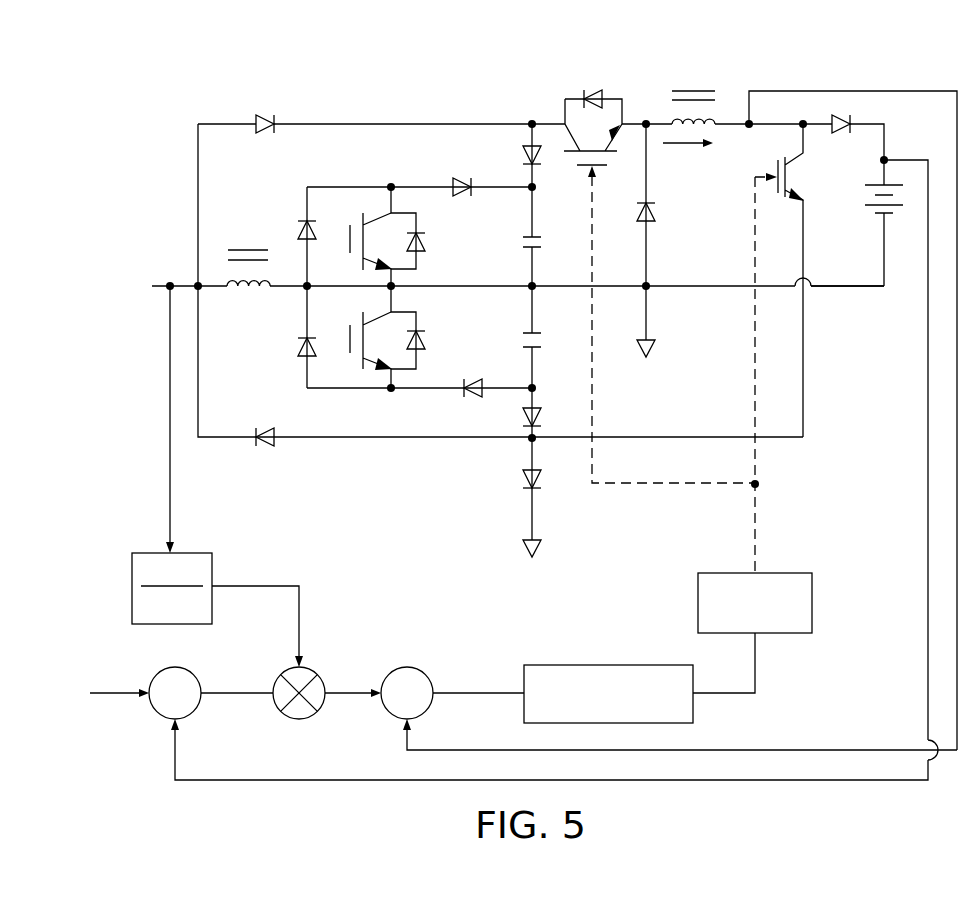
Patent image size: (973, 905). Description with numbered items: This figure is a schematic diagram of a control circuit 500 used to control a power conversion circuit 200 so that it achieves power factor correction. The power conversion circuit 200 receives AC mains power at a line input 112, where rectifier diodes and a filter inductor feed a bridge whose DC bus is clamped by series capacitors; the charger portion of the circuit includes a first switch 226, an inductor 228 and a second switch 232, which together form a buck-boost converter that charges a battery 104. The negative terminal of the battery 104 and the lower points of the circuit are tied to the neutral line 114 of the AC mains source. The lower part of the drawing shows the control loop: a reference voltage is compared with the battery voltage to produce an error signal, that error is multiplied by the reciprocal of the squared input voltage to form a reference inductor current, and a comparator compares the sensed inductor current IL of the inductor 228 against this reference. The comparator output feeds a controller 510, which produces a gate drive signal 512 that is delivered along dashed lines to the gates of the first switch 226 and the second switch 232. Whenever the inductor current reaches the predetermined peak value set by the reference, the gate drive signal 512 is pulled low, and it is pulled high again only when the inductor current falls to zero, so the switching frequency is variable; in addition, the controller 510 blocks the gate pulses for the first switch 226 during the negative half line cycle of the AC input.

The power conversion circuit 200 is at (178, 112).
The line input 112 is at (184, 280).
The first switch 226 is at (608, 92).
The inductor 228 is at (692, 88).
The second switch 232 is at (772, 177).
The battery 104 is at (866, 185).
The neutral line 114 is at (648, 292).
The gate drive signal 512 is at (757, 509).
The controller 510 is at (780, 573).
The control circuit 500 is at (156, 777).